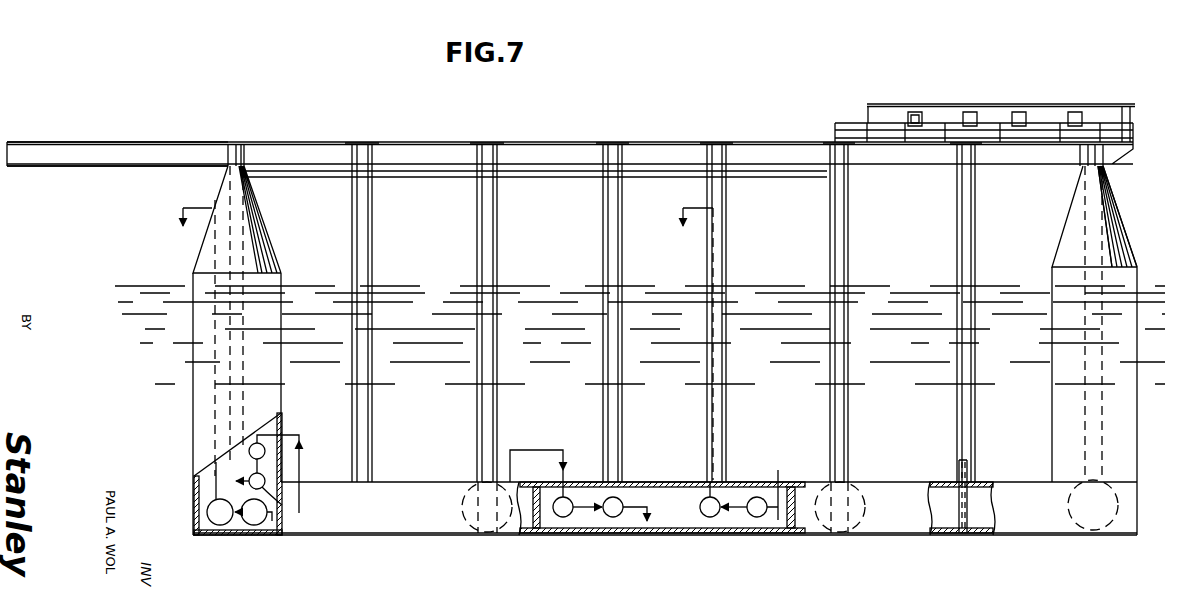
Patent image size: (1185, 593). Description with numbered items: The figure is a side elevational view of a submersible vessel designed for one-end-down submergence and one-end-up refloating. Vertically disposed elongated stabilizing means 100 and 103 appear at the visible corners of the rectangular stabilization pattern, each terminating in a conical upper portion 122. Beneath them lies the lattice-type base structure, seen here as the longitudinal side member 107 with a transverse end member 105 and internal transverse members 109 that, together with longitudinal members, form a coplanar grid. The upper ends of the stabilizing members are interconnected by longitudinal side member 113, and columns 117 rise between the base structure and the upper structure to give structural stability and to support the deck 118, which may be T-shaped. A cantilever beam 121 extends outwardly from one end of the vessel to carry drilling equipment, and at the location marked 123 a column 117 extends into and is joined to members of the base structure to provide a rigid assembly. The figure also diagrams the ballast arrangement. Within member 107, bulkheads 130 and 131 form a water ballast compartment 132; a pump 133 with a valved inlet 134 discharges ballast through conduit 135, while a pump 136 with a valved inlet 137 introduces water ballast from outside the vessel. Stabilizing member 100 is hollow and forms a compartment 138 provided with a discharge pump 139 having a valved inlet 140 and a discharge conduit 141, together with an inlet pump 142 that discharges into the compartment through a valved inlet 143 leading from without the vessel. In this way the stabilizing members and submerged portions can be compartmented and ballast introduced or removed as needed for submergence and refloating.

The stabilizing means 100 is at (194, 400).
The stabilizing means 103 is at (1137, 428).
The transverse end member 105 is at (1137, 500).
The longitudinal side member 107 is at (680, 533).
The transverse members 109 is at (465, 522).
The longitudinal side member 113 is at (900, 166).
The columns 117 is at (372, 241).
The deck 118 is at (752, 142).
The cantilever beam 121 is at (100, 166).
The conical upper portions 122 is at (1120, 238).
The joint of column to base structure 123 is at (956, 518).
The bulkhead 130 is at (549, 522).
The bulkhead 131 is at (802, 530).
The water ballast compartment 132 is at (675, 510).
The pump 133 is at (722, 518).
The valved inlet 134 is at (766, 486).
The conduit 135 is at (686, 207).
The pump 136 is at (614, 518).
The valved inlet 137 is at (560, 442).
The compartment 138 is at (205, 484).
The discharge pump 139 is at (222, 526).
The valved inlet 140 is at (255, 526).
The discharge conduit 141 is at (185, 207).
The inlet pump 142 is at (284, 508).
The valved inlet 143 is at (304, 440).